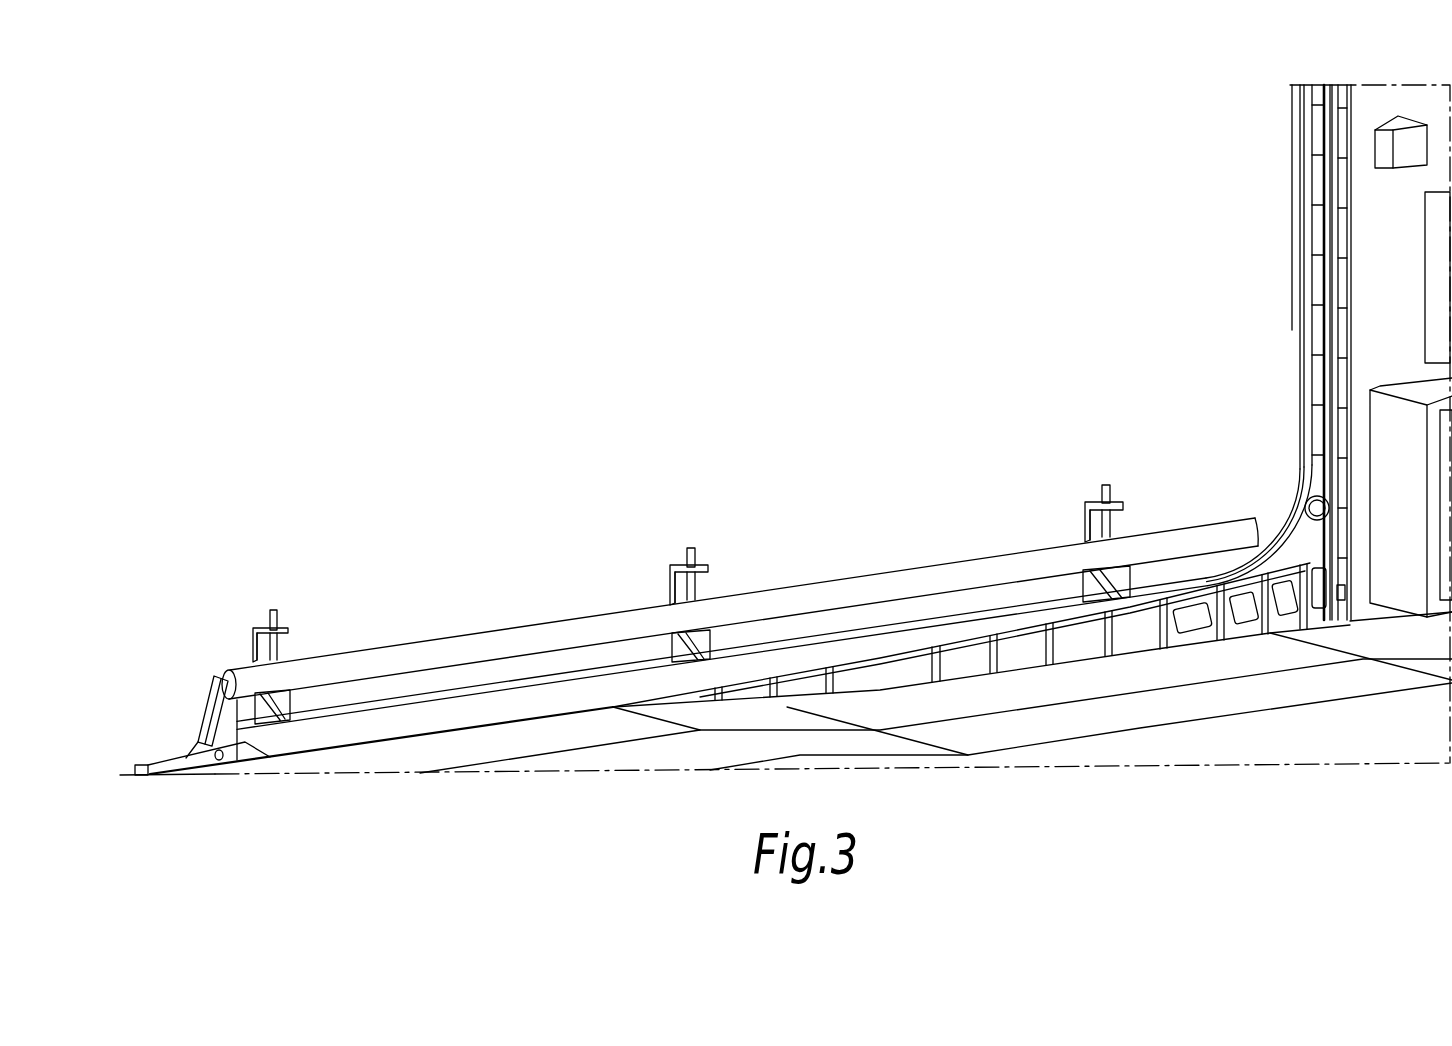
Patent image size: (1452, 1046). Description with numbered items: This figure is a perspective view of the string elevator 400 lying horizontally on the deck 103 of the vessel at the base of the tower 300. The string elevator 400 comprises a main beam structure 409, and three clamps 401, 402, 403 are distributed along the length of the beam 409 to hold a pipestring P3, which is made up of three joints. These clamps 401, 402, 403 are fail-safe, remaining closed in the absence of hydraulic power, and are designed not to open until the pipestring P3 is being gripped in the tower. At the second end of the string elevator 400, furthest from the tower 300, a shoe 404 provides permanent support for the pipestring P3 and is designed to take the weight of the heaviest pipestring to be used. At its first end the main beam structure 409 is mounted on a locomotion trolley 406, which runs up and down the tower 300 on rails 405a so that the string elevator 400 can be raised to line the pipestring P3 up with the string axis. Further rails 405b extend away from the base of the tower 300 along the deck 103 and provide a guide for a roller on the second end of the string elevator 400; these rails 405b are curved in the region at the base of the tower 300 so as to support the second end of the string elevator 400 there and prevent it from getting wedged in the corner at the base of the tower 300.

The tower 300 is at (1367, 98).
The string elevator 400 is at (423, 622).
The clamp 401 is at (1090, 503).
The clamp 402 is at (680, 565).
The clamp 403 is at (262, 628).
The shoe 404 is at (215, 678).
The rails 405a is at (1330, 222).
The further rails 405b is at (1283, 535).
The locomotion trolley 406 is at (1297, 497).
The main beam structure 409 is at (995, 637).
The pipestring P3 is at (518, 647).
The deck 103 is at (1030, 730).